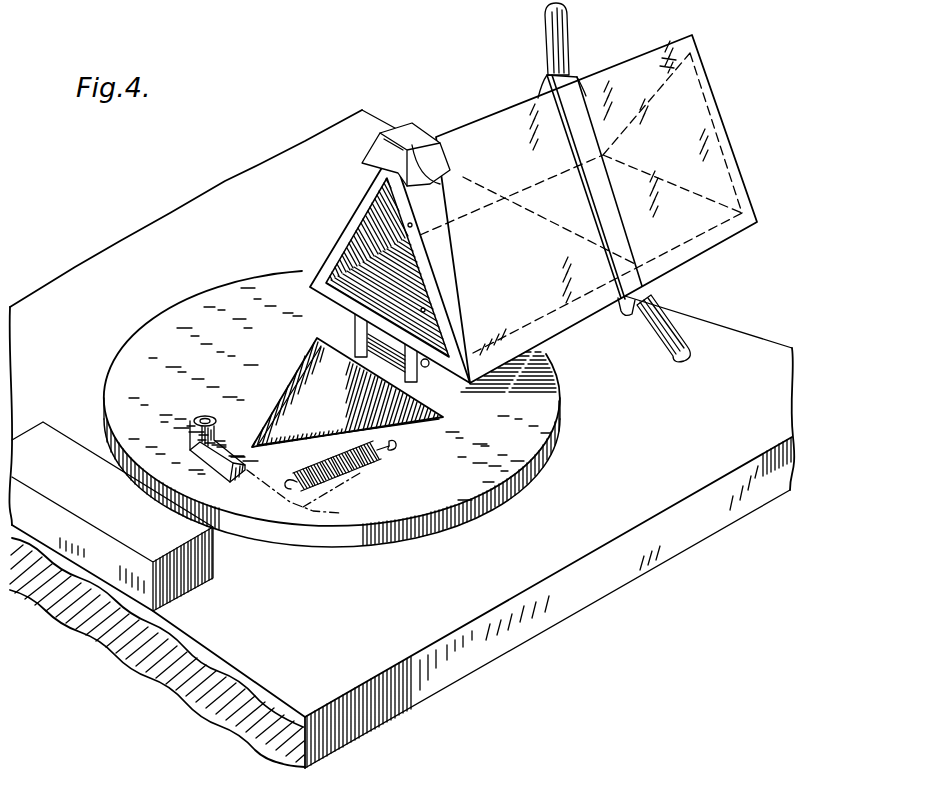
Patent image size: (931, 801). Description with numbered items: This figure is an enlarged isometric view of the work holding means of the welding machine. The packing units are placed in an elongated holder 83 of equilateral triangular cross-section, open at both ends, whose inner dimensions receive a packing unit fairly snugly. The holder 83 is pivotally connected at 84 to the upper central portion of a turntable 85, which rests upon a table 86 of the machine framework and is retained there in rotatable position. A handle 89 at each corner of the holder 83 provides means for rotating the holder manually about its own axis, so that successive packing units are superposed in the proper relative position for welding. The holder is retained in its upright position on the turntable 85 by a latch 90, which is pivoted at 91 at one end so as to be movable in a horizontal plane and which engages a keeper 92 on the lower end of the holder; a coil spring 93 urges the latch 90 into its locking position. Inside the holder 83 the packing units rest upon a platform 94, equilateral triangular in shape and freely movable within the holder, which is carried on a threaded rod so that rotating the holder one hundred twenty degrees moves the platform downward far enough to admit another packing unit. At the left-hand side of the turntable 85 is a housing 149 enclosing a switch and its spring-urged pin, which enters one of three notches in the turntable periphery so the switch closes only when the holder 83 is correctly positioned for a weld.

The holder 83 is at (710, 238).
The pivotal connection 84 is at (432, 367).
The turntable 85 is at (540, 442).
The table 86 is at (523, 620).
The handle 89 is at (565, 27).
The latch 90 is at (309, 498).
The pivot 91 is at (207, 415).
The keeper 92 is at (445, 195).
The coil spring 93 is at (360, 472).
The platform 94 is at (308, 365).
The housing 149 is at (190, 578).